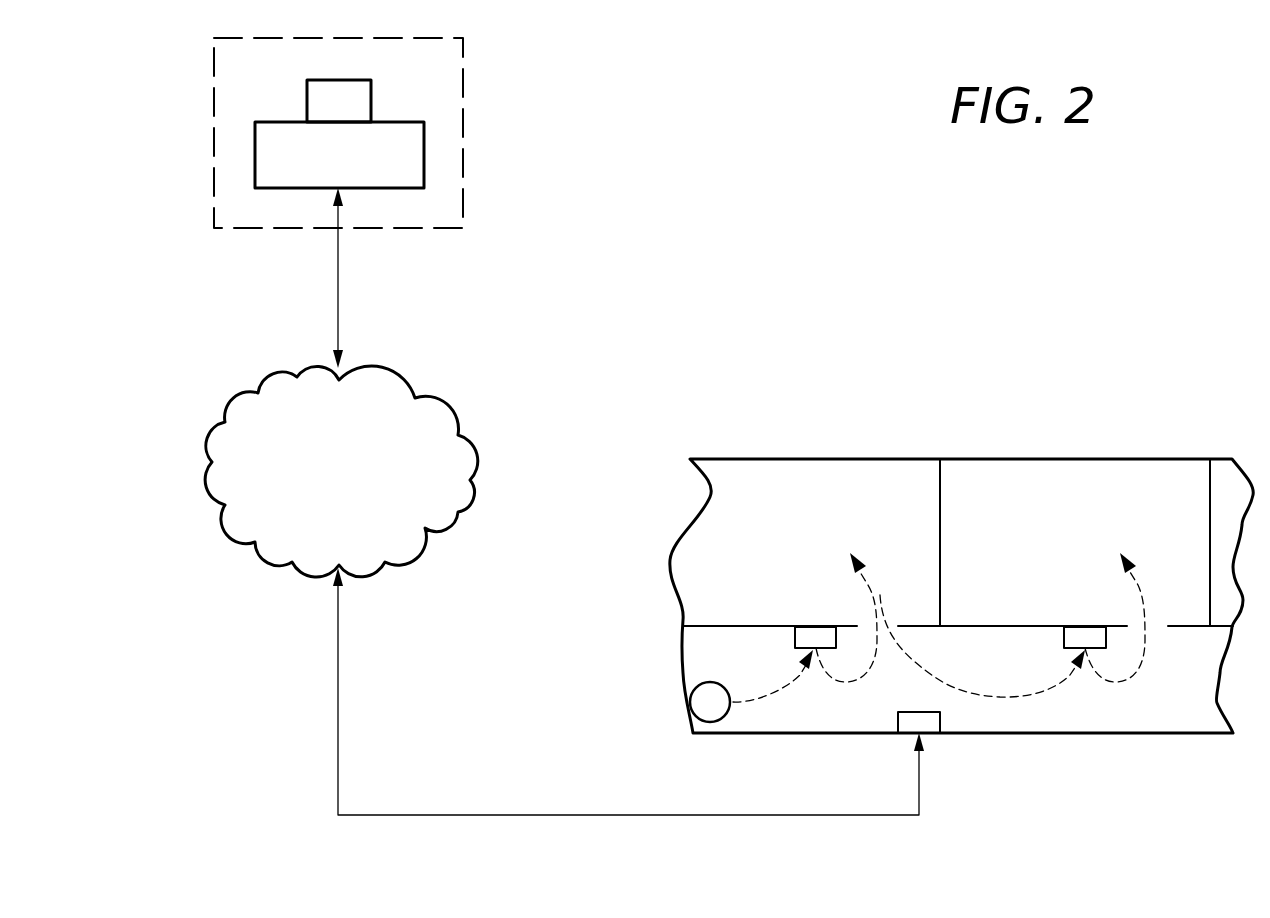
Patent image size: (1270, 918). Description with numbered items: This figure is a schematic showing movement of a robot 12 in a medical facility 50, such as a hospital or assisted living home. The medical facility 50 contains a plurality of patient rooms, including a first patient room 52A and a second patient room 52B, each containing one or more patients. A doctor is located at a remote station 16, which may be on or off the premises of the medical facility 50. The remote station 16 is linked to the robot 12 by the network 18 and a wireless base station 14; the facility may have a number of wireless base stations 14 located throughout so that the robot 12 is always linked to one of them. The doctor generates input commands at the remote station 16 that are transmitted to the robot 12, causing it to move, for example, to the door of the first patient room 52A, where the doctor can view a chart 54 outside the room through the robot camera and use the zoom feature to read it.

The remote station 16 is at (452, 165).
The network 18 is at (341, 471).
The medical facility 50 is at (961, 596).
The first patient room 52A is at (831, 609).
The second patient room 52B is at (1012, 616).
The chart 54 is at (819, 635).
The robot 12 is at (698, 691).
The wireless base station 14 is at (930, 712).